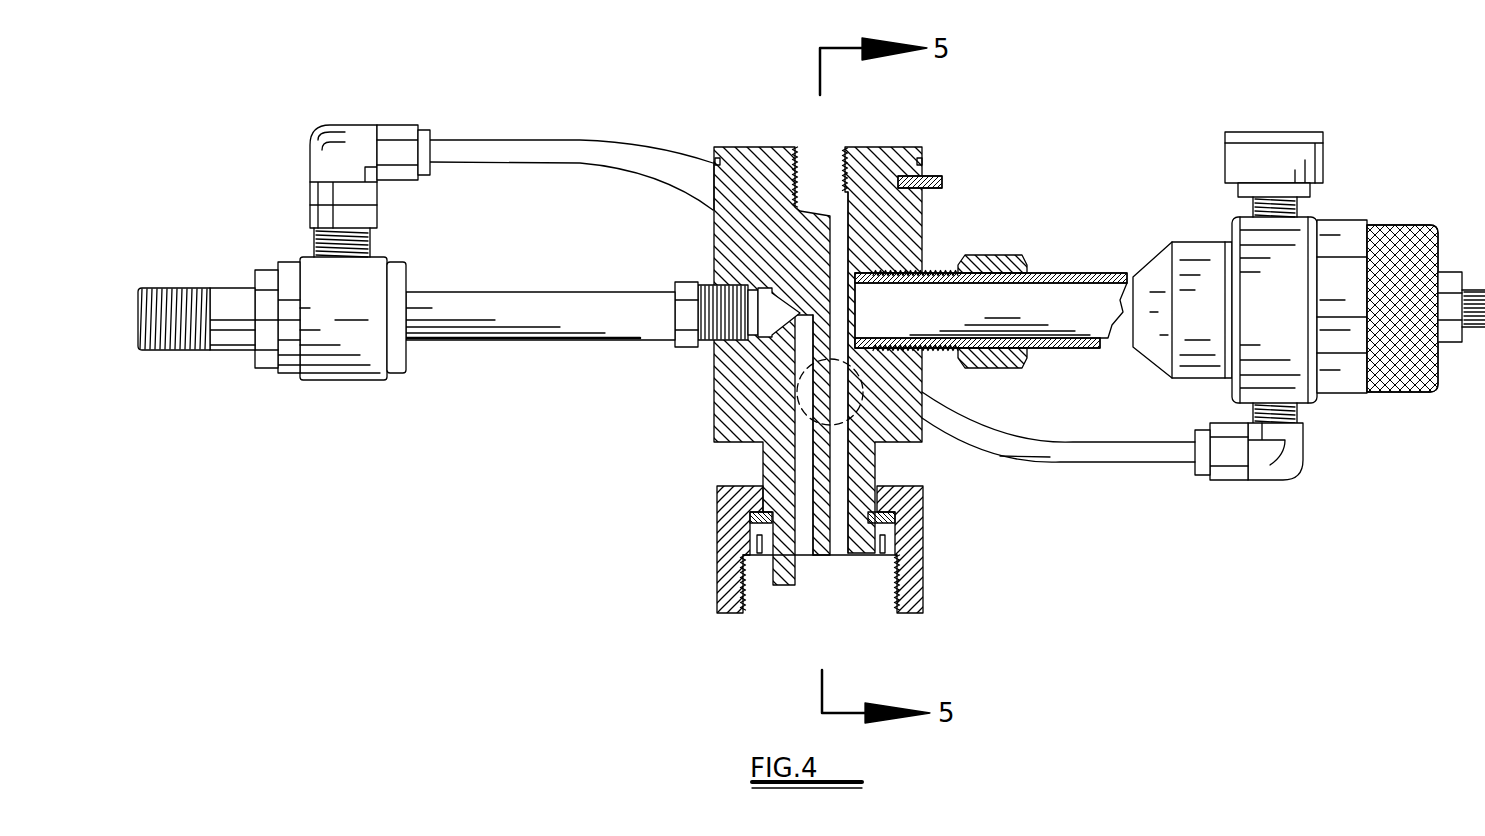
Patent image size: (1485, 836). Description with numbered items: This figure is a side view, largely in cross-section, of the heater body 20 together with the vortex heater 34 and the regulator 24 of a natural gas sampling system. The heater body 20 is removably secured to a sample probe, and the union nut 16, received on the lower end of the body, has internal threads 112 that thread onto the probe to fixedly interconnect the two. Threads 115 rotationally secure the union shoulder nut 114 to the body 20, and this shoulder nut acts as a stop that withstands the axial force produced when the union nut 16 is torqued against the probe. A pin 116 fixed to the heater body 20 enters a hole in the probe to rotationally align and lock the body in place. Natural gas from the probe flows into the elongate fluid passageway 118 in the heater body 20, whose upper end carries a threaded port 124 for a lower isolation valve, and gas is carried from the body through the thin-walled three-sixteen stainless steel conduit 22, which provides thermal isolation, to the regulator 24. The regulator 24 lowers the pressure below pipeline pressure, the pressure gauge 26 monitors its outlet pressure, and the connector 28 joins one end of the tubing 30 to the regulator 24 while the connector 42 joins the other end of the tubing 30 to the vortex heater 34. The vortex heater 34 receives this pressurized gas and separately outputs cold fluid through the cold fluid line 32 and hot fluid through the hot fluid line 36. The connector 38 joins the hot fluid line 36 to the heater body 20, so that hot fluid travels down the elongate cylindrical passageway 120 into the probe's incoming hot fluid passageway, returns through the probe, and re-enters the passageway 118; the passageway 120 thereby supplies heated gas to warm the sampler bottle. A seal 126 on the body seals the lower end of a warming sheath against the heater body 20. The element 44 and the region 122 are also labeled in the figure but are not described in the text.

The union nut 16 is at (923, 527).
The heater body 20 is at (713, 232).
The threaded conduit 22 is at (978, 256).
The regulator 24 is at (1345, 395).
The pressure gauge 26 is at (1310, 157).
The connector 28 is at (1283, 482).
The tubing 30 is at (1083, 462).
The cold fluid line 32 is at (235, 288).
The vortex heater 34 is at (342, 318).
The hot fluid line 36 is at (524, 292).
The connector 38 is at (680, 348).
The connector 42 is at (343, 130).
The set screw 44 is at (948, 180).
The internal threads 112 is at (878, 575).
The union shoulder nut 114 is at (750, 525).
The threads 115 is at (857, 555).
The pin 116 is at (771, 587).
The fluid passageway 118 is at (845, 466).
The hot fluid passageway 120 is at (812, 462).
The mixing chamber 122 is at (797, 400).
The threaded port 124 is at (800, 148).
The seal 126 is at (708, 158).